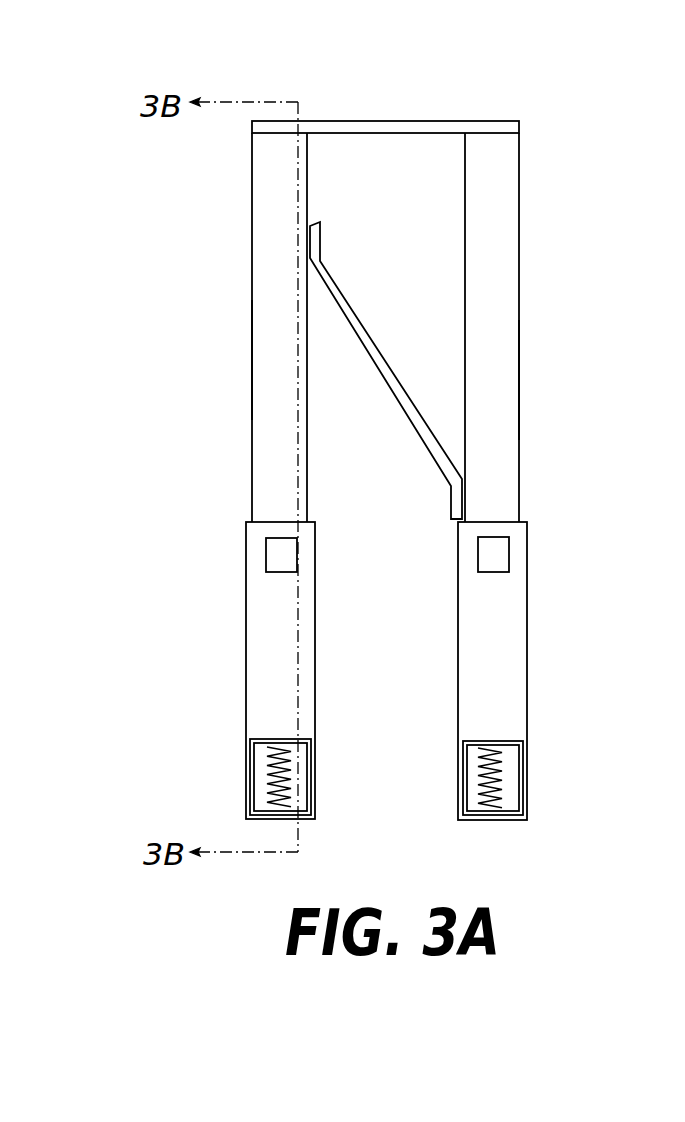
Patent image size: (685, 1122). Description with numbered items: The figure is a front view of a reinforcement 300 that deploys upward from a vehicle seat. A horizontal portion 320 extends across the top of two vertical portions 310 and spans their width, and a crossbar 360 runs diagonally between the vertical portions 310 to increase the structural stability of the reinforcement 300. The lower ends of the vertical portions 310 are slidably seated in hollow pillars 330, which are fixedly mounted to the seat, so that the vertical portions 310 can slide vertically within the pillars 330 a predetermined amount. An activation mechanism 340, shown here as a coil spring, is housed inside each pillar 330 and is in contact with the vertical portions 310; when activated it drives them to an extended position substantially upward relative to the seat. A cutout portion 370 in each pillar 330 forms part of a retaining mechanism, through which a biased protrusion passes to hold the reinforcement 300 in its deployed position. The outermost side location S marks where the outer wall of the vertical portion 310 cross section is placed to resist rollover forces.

The reinforcement 300 is at (196, 466).
The vertical portions 310 is at (262, 214).
The horizontal portion 320 is at (418, 121).
The hollow pillars 330 is at (265, 640).
The activation mechanism 340 is at (258, 768).
The crossbar 360 is at (368, 332).
The cutout portion 370 is at (275, 557).
The outermost side location S is at (251, 368).